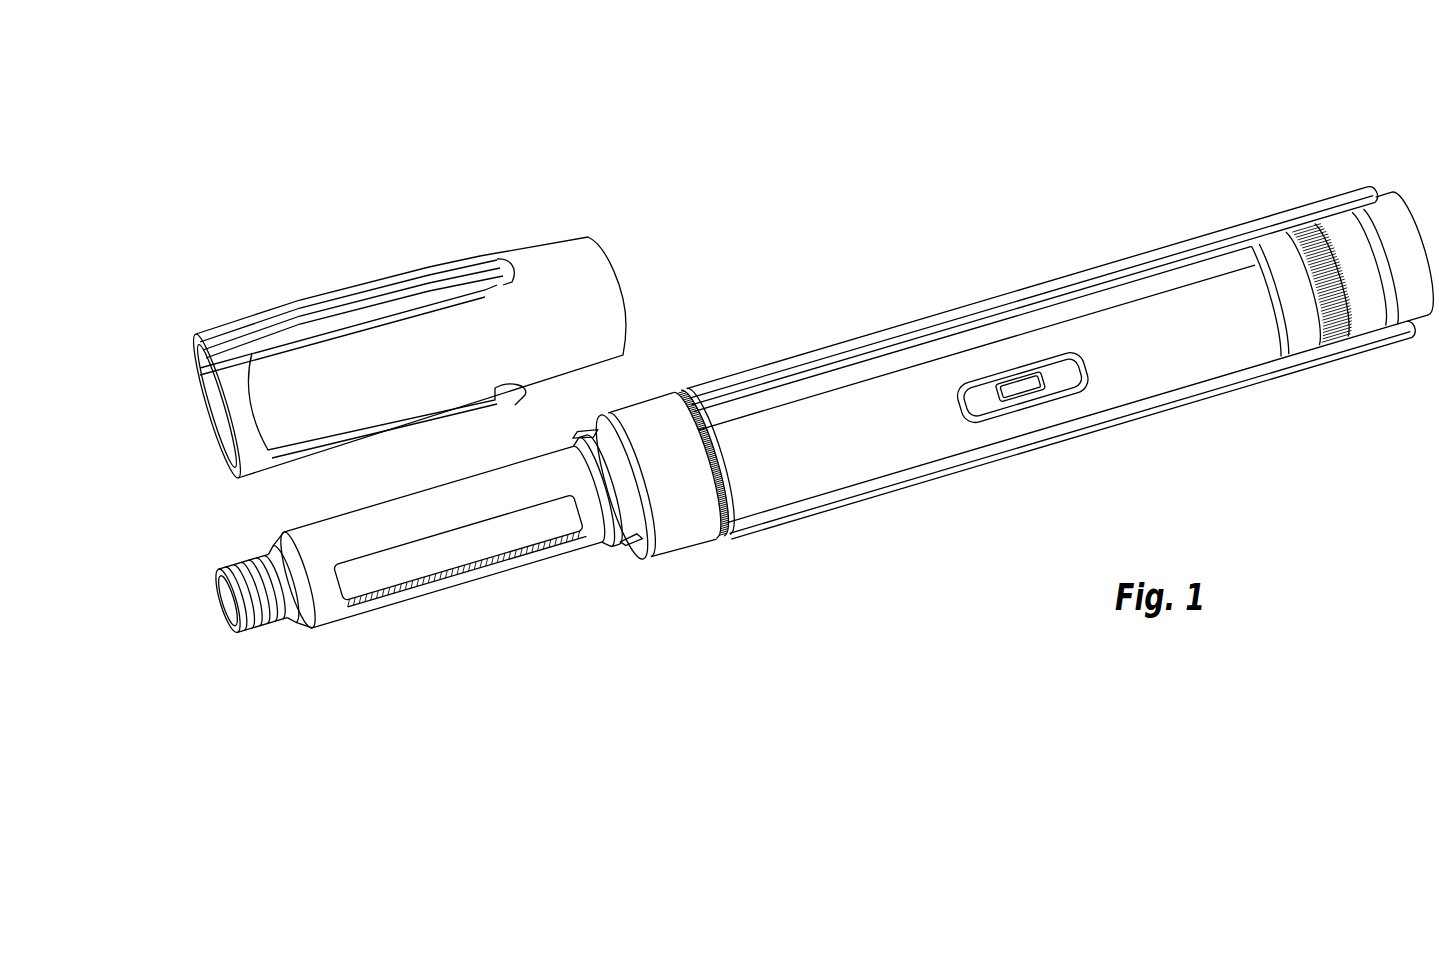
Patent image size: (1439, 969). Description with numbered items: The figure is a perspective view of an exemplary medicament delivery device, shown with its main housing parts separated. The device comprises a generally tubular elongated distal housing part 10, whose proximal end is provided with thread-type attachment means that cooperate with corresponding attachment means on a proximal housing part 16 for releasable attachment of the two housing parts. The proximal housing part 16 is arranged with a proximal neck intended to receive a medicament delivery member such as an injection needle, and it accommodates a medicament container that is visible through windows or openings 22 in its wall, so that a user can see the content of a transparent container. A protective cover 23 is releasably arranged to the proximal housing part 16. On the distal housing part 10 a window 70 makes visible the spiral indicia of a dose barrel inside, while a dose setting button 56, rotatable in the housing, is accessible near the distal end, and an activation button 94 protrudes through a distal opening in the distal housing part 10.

The distal housing part 10 is at (1178, 313).
The proximal housing part 16 is at (422, 600).
The windows or openings 22 is at (490, 540).
The protective cover 23 is at (457, 347).
The dose setting button 56 is at (1363, 302).
The window 70 is at (1015, 398).
The activation button 94 is at (1396, 222).